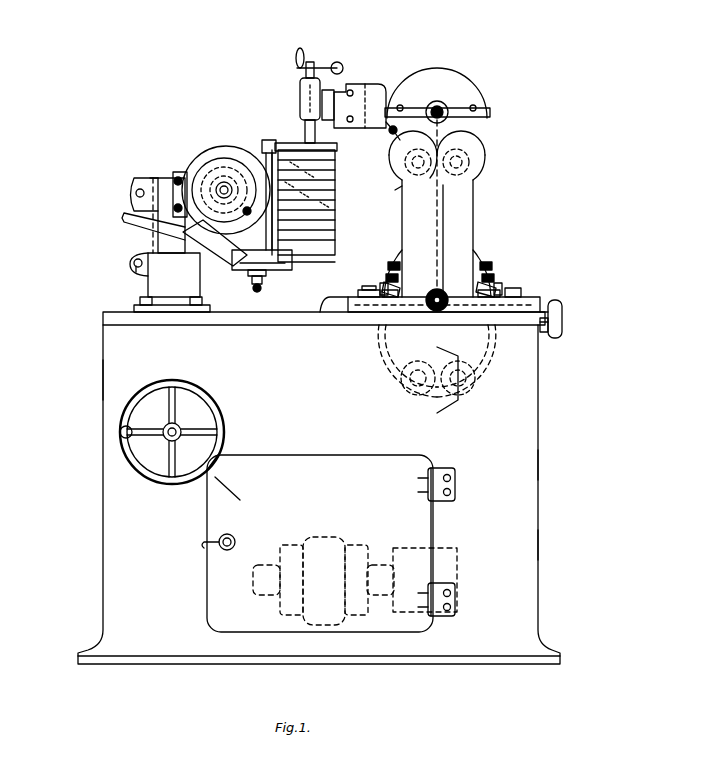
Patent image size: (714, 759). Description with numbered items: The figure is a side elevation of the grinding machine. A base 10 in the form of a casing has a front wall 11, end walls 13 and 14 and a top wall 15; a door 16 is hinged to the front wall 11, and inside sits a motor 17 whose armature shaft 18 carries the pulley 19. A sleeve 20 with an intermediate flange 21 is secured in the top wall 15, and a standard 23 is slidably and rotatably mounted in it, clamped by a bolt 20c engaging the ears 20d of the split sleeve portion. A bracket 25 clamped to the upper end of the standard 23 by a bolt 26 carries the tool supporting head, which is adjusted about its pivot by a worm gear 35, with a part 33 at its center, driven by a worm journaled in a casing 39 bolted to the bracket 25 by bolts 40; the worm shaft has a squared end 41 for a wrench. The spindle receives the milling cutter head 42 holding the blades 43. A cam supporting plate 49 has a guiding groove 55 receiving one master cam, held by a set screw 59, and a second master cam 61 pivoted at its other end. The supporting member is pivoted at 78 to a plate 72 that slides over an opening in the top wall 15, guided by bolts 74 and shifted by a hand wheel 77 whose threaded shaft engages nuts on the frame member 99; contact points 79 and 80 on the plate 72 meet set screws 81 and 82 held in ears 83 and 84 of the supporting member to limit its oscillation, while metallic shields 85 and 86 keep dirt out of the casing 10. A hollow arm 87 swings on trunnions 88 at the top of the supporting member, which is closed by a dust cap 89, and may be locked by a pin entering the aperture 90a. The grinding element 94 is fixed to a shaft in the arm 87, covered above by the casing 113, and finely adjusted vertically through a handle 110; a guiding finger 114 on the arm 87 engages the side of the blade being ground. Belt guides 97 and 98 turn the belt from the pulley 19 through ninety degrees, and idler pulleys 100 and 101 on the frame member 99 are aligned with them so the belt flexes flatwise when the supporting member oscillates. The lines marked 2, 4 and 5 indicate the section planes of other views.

The section line 2- 2 is at (585, 402).
The section line 4- 4 is at (437, 692).
The section line 5-5 / hand wheel 5 is at (173, 312).
The base 10 is at (528, 512).
The front wall 11 is at (512, 552).
The end wall 13 is at (538, 470).
The end wall 14 is at (103, 377).
The top wall 15 is at (116, 312).
The door 16 is at (207, 582).
The motor 17 is at (318, 537).
The armature shaft 18 is at (218, 542).
The pulley 19 is at (457, 582).
The sleeve 20 is at (148, 285).
The bolt 20c is at (130, 262).
The ears 20d is at (136, 269).
The flange 21 is at (204, 310).
The standard 23 is at (158, 243).
The bracket 25 is at (152, 178).
The bolt 26 is at (134, 192).
The shaft 33 is at (224, 182).
The worm gear 35 is at (236, 170).
The casing 39 is at (220, 147).
The bolts 40 is at (170, 185).
The squared end 41 is at (124, 218).
The milling cutter head 42 is at (308, 255).
The blades 43 is at (318, 214).
The cam supporting plate 49 is at (274, 276).
The guiding groove 55 is at (276, 262).
The set screw 59 is at (265, 288).
The master cam 61 is at (269, 140).
The plate 72 is at (526, 297).
The bolts 74 is at (360, 293).
The hand wheel 77 is at (556, 325).
The pivot 78 is at (432, 311).
The contact point 79 is at (382, 292).
The contact point 80 is at (500, 297).
The set screw 81 is at (392, 260).
The set screw 82 is at (488, 266).
The ear 83 is at (384, 282).
The ear 84 is at (498, 284).
The metallic shield 85 is at (320, 312).
The metallic shield 86 is at (555, 302).
The hollow arm 87 is at (382, 82).
The trunnions 88 is at (447, 106).
The dust cap 89 is at (455, 82).
The aperture 90a is at (392, 133).
The grinding element 94 is at (310, 143).
The belt guide 97 is at (390, 185).
The belt guide 98 is at (470, 161).
The frame member 99 is at (383, 362).
The idler pulley 100 is at (476, 384).
The idler pulley 101 is at (405, 386).
The handle 110 is at (340, 64).
The casing 113 is at (300, 92).
The guiding finger 114 is at (390, 130).